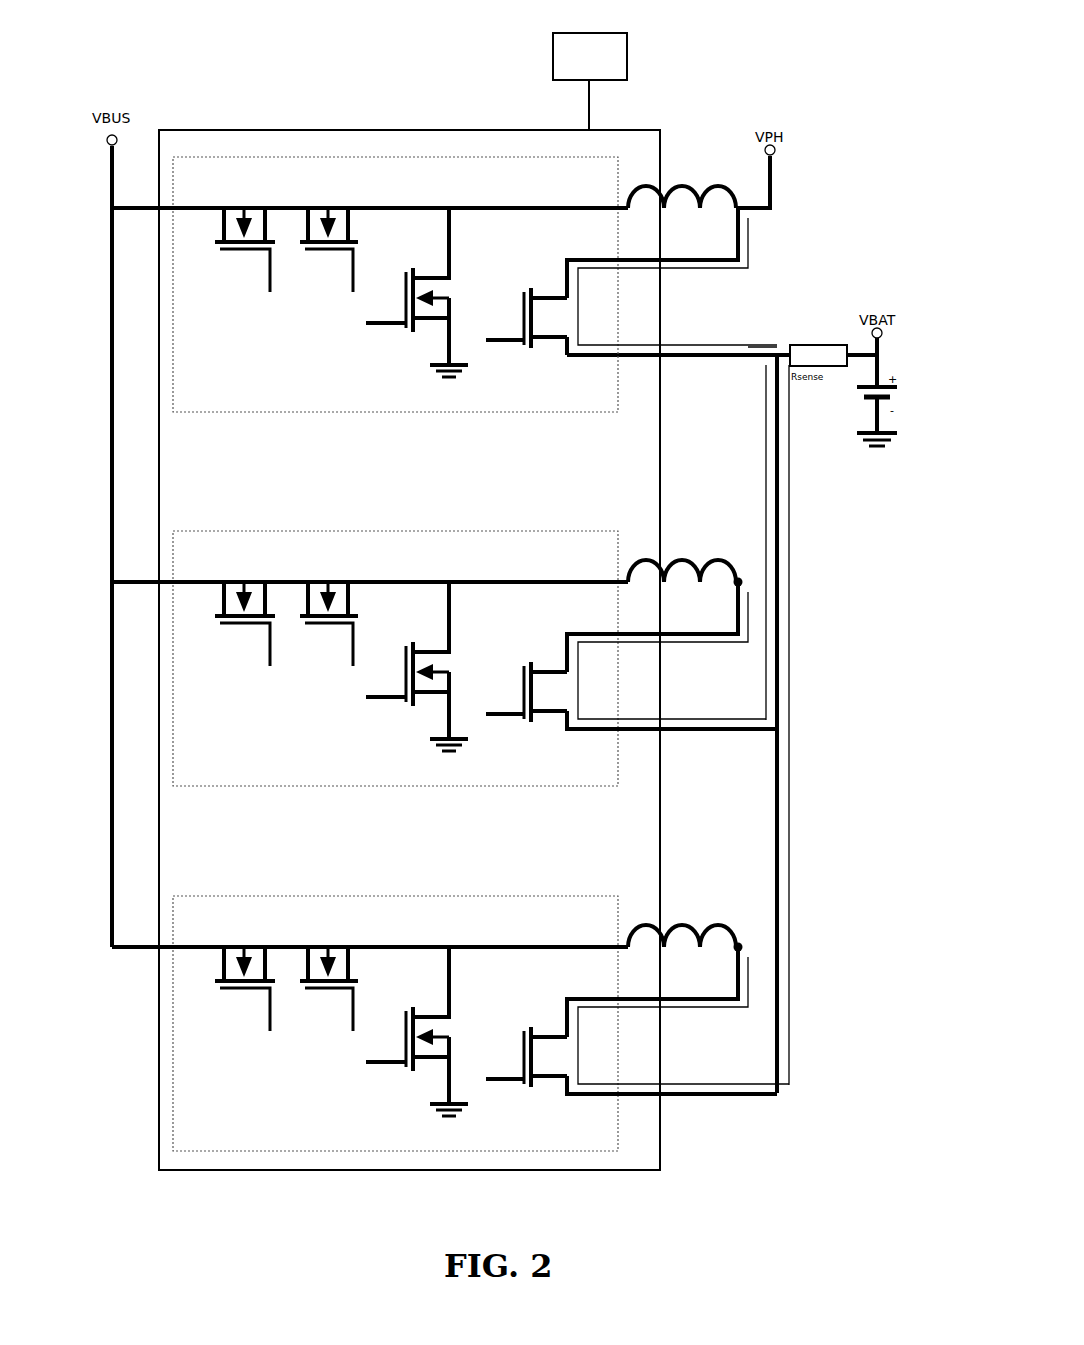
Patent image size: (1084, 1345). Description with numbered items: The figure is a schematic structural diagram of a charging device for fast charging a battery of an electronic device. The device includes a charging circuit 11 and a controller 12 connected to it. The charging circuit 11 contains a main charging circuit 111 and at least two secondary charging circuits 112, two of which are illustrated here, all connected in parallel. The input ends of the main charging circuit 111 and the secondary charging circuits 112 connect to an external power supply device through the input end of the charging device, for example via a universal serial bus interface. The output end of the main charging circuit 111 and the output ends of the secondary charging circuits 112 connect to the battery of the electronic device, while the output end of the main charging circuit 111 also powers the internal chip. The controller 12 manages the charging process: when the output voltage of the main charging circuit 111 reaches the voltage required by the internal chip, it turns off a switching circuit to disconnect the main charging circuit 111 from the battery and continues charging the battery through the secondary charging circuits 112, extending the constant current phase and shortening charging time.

The charging circuit 11 is at (376, 130).
The controller 12 is at (627, 50).
The main charging circuit 111 is at (448, 413).
The secondary charging circuits 112 is at (328, 532).